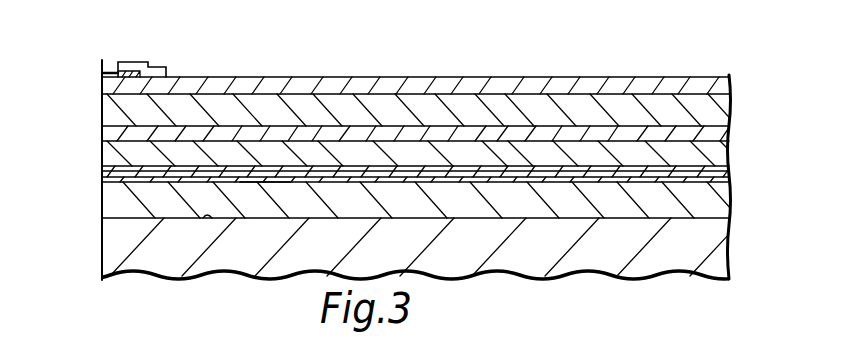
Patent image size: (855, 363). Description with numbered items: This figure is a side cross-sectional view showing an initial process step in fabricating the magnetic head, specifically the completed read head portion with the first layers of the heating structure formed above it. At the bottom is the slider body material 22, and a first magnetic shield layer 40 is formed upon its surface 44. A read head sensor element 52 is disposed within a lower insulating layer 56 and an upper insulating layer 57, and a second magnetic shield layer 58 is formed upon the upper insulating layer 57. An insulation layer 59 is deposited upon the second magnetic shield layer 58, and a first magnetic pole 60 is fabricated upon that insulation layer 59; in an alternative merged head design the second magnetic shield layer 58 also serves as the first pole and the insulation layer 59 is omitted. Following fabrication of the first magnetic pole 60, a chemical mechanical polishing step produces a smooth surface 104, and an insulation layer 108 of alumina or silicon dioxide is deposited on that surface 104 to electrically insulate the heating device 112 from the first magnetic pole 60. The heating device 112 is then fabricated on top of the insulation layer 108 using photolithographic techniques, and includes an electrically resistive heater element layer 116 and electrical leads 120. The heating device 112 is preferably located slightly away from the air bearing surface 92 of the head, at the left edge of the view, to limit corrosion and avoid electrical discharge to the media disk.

The slider body material 22 is at (120, 245).
The first magnetic shield layer 40 is at (115, 202).
The surface 44 is at (205, 222).
The read head sensor element 52 is at (115, 182).
The insulating layer 56 is at (258, 184).
The insulating layer 57 is at (376, 187).
The second magnetic shield layer 58 is at (100, 158).
The insulation layer 59 is at (118, 134).
The first magnetic pole 60 is at (120, 112).
The air bearing surface 92 is at (101, 62).
The smooth surface 104 is at (231, 77).
The insulation layer 108 is at (118, 90).
The heating device 112 is at (141, 39).
The electrically resistive heater element layer 116 is at (117, 81).
The electrical leads 120 is at (158, 63).